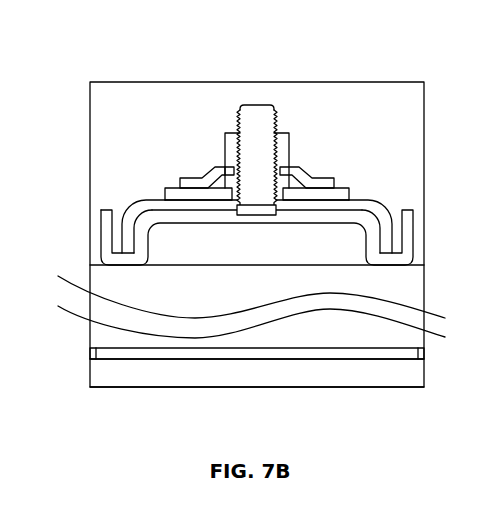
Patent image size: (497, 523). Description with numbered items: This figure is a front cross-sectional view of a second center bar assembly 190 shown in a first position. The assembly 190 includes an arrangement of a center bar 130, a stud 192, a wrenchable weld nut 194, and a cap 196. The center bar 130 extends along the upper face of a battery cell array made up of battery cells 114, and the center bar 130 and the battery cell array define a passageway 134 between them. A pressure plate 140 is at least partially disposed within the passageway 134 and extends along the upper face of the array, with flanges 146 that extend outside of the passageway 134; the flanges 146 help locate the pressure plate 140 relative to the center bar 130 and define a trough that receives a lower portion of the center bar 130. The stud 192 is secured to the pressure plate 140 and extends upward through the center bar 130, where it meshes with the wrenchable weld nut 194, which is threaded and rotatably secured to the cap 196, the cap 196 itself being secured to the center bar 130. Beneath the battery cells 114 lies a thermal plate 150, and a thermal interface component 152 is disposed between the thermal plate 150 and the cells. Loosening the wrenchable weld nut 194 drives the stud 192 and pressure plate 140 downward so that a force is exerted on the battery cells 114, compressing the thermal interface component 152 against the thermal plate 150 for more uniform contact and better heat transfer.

The battery cell 114 is at (107, 295).
The center bar 130 is at (355, 187).
The passageway 134 is at (324, 244).
The pressure plate 140 is at (165, 199).
The flange 146 is at (107, 227).
The thermal plate 150 is at (132, 373).
The thermal interface component 152 is at (173, 352).
The second center bar assembly 190 is at (218, 131).
The stud 192 is at (255, 117).
The wrenchable weld nut 194 is at (282, 130).
The cap 196 is at (323, 175).